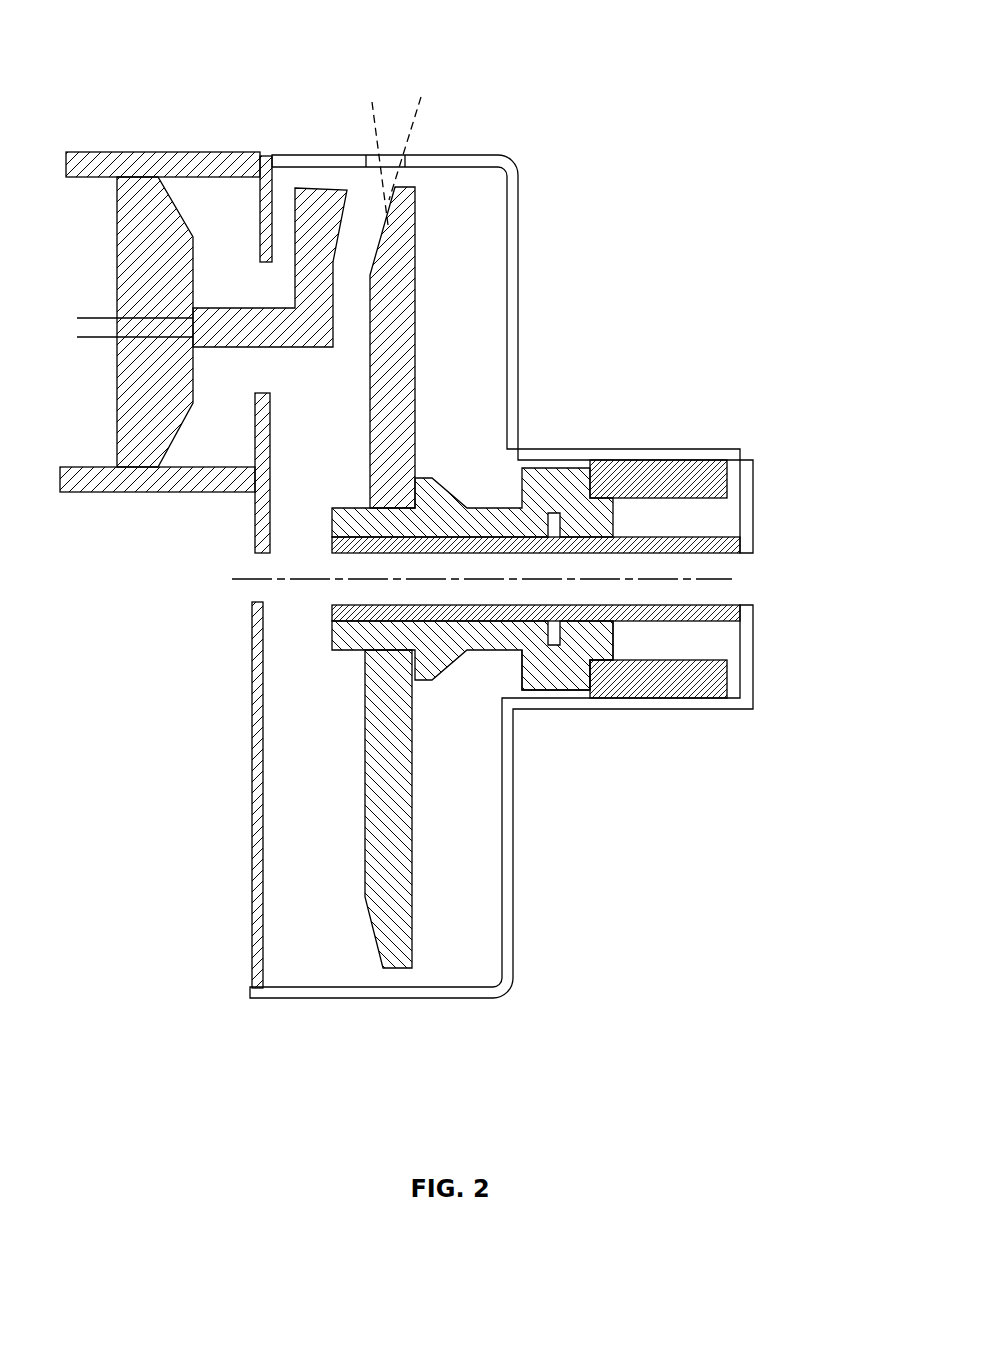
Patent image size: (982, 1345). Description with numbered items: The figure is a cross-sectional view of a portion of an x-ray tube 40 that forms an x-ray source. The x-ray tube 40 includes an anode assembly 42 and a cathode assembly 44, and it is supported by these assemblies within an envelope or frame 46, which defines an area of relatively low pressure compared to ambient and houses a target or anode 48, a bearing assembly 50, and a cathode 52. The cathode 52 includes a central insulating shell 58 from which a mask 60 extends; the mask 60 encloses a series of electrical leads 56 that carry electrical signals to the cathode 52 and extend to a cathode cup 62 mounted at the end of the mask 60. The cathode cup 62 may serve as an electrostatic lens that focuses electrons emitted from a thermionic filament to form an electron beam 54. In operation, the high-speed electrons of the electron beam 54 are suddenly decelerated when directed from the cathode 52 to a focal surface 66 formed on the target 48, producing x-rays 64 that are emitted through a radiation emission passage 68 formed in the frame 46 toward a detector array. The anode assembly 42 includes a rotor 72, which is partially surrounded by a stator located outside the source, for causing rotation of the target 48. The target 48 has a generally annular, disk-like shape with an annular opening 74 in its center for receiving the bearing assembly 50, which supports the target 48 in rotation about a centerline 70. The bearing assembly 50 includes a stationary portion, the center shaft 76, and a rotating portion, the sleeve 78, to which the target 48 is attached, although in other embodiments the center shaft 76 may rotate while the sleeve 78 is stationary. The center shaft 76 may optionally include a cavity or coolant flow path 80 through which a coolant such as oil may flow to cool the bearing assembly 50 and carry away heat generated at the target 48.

The x-ray tube 40 is at (442, 43).
The anode assembly 42 is at (530, 160).
The cathode assembly 44 is at (213, 120).
The frame 46 is at (283, 1000).
The target 48 is at (418, 318).
The bearing assembly 50 is at (625, 637).
The cathode 52 is at (285, 272).
The electron beam 54 is at (377, 231).
The electrical leads 56 is at (88, 317).
The central insulating shell 58 is at (116, 200).
The mask 60 is at (288, 347).
The cathode cup 62 is at (323, 185).
The x-rays 64 is at (421, 116).
The focal surface 66 is at (363, 932).
The radiation emission passage 68 is at (410, 157).
The centerline 70 is at (285, 577).
The rotor 72 is at (668, 460).
The annular opening 74 is at (357, 503).
The center shaft 76 is at (482, 603).
The sleeve 78 is at (490, 650).
The coolant flow path 80 is at (752, 580).